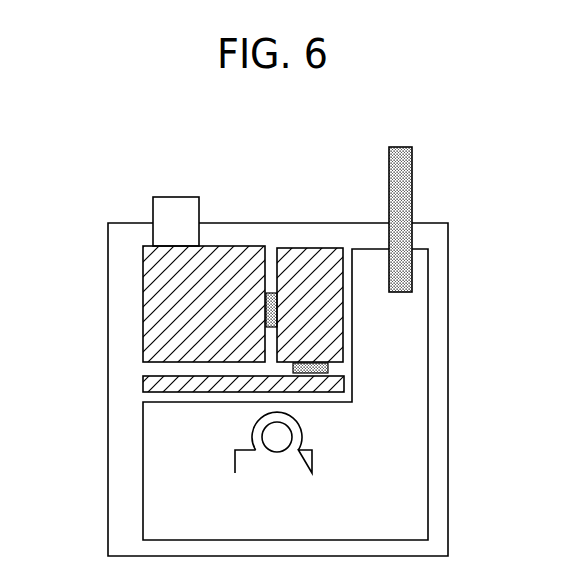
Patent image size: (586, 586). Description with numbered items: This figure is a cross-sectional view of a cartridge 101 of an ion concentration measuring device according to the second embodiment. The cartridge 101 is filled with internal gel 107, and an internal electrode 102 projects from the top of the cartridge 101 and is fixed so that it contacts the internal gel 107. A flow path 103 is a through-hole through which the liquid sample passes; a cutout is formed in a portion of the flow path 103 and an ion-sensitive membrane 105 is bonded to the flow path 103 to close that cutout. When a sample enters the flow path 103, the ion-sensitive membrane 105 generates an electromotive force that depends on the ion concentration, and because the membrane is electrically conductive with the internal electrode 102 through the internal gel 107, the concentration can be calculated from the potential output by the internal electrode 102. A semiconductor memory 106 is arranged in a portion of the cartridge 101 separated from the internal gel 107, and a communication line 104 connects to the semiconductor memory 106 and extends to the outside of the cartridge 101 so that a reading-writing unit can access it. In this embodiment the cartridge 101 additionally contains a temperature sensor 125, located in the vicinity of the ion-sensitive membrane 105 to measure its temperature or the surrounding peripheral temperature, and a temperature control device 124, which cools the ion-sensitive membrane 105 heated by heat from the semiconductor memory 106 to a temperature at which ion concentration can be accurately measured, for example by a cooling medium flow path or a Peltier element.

The cartridge 101 is at (448, 328).
The internal electrode 102 is at (412, 178).
The flow path 103 is at (292, 437).
The communication line 104 is at (173, 197).
The ion-sensitive membrane 105 is at (235, 463).
The semiconductor memory 106 is at (143, 312).
The internal gel 107 is at (428, 415).
The temperature control device 124 is at (300, 248).
The temperature sensor 125 is at (143, 386).